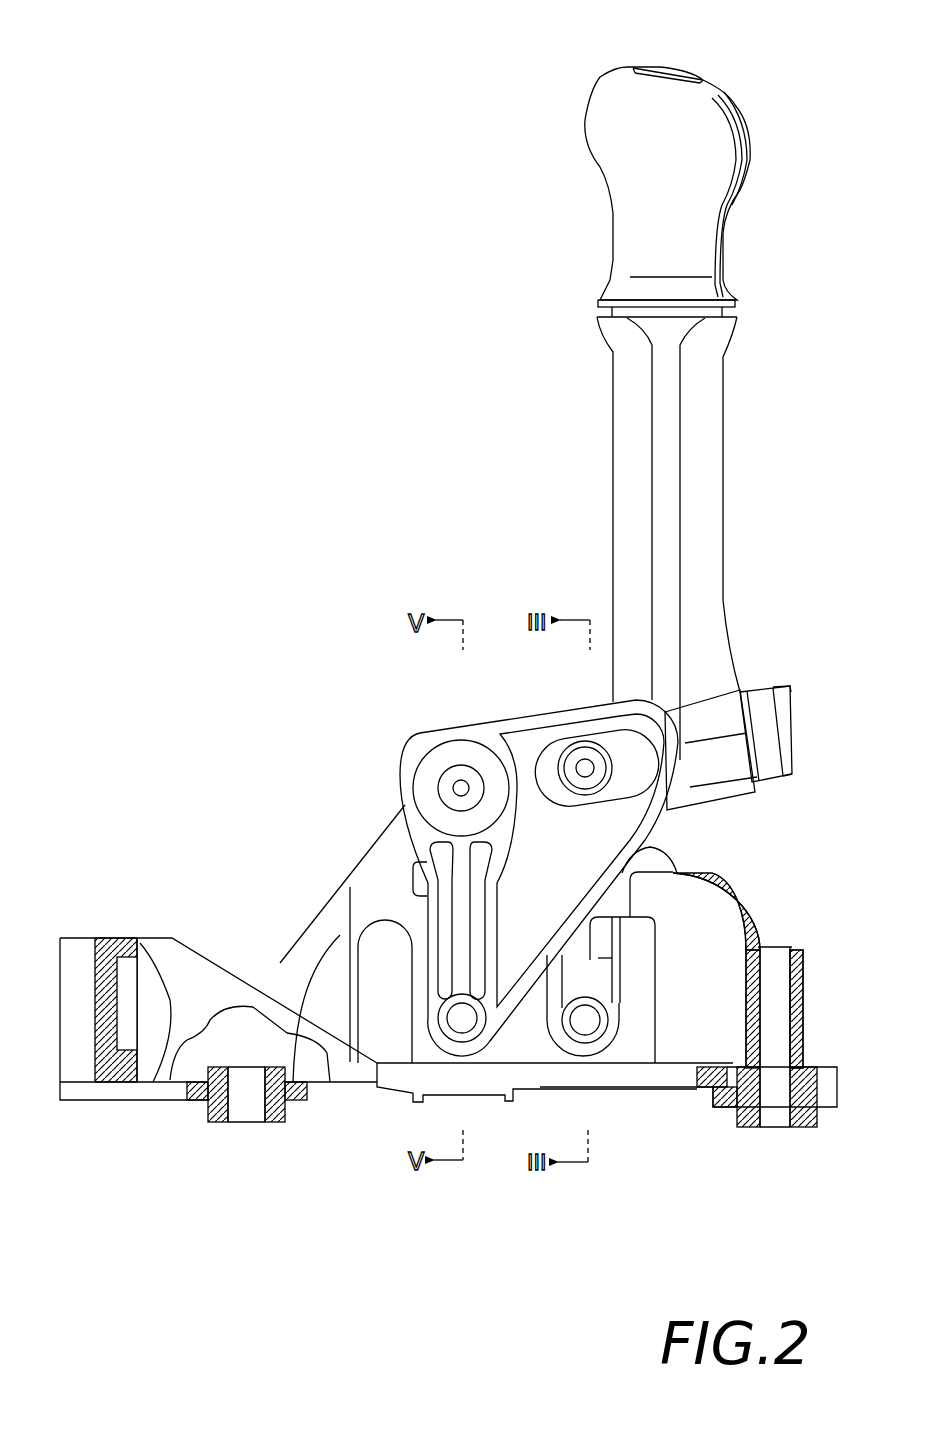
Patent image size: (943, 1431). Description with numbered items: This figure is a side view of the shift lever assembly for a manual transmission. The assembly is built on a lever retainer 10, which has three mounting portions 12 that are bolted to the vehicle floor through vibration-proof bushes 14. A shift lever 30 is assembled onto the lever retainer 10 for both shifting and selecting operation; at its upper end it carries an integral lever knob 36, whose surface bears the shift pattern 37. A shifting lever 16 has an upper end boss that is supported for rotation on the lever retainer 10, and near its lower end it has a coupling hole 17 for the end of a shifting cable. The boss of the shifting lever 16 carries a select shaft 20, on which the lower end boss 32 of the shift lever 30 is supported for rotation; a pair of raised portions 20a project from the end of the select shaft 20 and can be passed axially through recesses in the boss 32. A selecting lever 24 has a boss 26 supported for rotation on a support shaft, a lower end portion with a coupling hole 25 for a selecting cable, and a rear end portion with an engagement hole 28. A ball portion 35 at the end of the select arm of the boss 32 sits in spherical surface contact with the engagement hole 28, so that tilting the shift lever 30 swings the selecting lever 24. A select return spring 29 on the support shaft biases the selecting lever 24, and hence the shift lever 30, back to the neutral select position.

The lever retainer 10 is at (327, 938).
The mounting portions 12 is at (200, 1040).
The vibration-proof bushes 14 is at (273, 1067).
The shifting lever 16 is at (598, 958).
The coupling hole 17 is at (590, 1022).
The select shaft 20 is at (773, 740).
The raised portions 20a is at (763, 687).
The selecting lever 24 is at (440, 930).
The coupling hole 25 is at (463, 1020).
The boss 26 is at (407, 775).
The engagement hole 28 is at (627, 753).
The select return spring 29 is at (412, 868).
The shift lever 30 is at (700, 466).
The lower end boss 32 is at (707, 797).
The ball portion 35 is at (580, 765).
The lever knob 36 is at (632, 220).
The shift pattern 37 is at (655, 67).